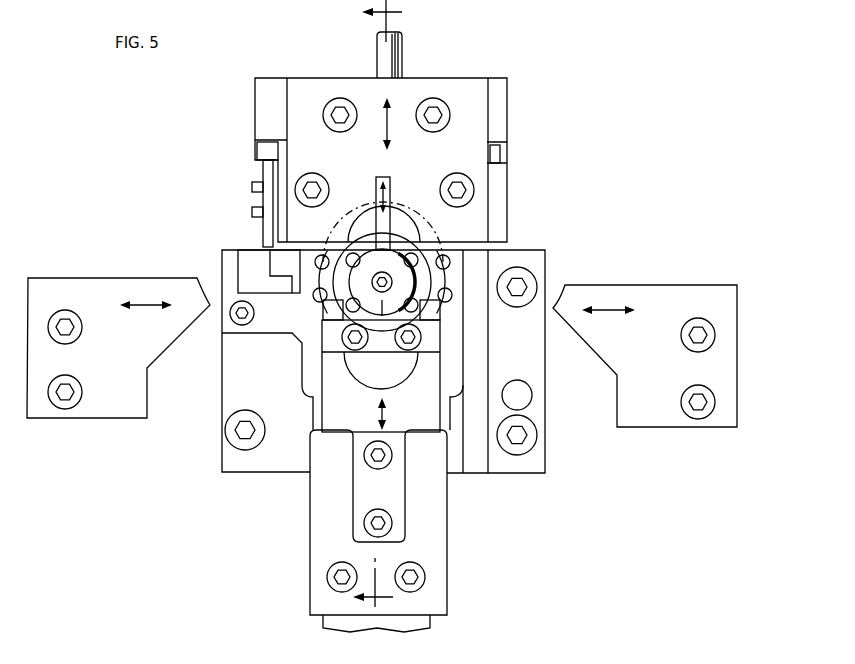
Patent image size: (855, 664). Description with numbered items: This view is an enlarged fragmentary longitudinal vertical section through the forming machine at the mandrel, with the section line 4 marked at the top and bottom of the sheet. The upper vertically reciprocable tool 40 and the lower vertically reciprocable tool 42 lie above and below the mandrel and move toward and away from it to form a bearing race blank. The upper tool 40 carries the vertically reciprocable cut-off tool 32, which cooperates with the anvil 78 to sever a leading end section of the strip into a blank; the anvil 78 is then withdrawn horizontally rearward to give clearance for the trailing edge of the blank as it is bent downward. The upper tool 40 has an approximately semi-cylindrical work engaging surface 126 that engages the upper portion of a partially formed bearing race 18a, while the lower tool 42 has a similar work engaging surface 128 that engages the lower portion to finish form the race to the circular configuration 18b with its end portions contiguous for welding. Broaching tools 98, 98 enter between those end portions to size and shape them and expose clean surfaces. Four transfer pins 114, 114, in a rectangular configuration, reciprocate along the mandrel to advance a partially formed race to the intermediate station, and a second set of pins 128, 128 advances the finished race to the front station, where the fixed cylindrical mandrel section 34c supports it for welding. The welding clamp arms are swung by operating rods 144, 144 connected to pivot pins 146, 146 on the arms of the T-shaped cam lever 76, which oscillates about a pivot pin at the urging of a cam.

The section line 4- 4 is at (413, 6).
The upper vertically reciprocable tool 40 is at (478, 110).
The lower vertically reciprocable tool 42 is at (322, 414).
The cut-off tool 32 is at (252, 187).
The cam lever 76 is at (376, 183).
The anvil 78 is at (250, 252).
The work engaging surface 126 is at (405, 200).
The transfer pins 128 is at (350, 248).
The transfer pins 114 is at (318, 284).
The broaching tools 98 is at (440, 315).
The partially formed bearing race 18a is at (470, 262).
The circular bearing race 18b is at (400, 372).
The fixed cylindrical mandrel section 34c is at (355, 362).
The operating rods 144 is at (108, 292).
The pivot pins 146 is at (660, 292).